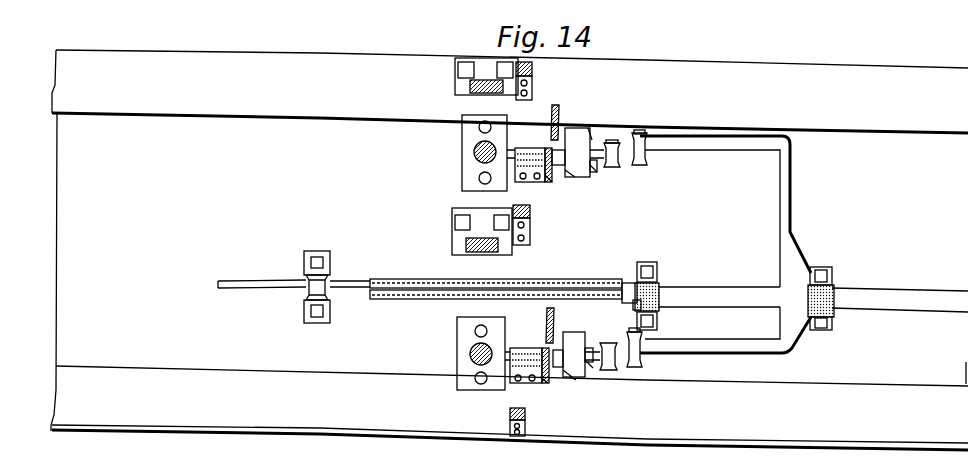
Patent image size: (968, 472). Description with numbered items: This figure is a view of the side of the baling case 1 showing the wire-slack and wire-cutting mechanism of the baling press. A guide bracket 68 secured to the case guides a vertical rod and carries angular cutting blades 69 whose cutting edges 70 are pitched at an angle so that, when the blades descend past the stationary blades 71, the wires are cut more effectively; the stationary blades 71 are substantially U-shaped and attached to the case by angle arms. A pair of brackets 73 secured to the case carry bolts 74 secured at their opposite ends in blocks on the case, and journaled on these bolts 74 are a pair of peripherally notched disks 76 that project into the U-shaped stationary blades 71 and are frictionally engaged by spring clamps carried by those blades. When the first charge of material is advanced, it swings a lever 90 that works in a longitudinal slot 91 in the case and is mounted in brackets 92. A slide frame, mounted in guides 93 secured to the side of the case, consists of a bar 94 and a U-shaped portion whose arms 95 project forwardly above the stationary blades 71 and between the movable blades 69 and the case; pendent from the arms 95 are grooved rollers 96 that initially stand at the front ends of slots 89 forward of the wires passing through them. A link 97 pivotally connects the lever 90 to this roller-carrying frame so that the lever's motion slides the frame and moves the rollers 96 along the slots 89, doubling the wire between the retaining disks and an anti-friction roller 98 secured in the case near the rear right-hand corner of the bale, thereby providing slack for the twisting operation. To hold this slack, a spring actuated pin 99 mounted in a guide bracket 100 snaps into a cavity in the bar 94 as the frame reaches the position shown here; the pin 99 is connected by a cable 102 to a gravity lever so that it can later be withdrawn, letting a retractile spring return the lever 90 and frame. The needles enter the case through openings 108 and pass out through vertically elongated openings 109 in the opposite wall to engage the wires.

The machine frame 1 is at (509, 250).
The guide bracket 68 is at (533, 70).
The angular cutting blades 69 is at (560, 128).
The cutting edges 70 is at (585, 252).
The stationary blades 71 is at (548, 180).
The brackets 73 is at (455, 85).
The bolts 74 is at (462, 152).
The disks 76 is at (536, 144).
The slots 89 is at (593, 166).
The lever 90 is at (345, 284).
The longitudinal slot 91 is at (226, 284).
The brackets 92 is at (306, 318).
The guides 93 is at (658, 276).
The bar 94 is at (902, 290).
The arms 95 is at (740, 150).
The grooved rollers 96 is at (648, 153).
The link 97 is at (410, 299).
The anti-friction roller 98 is at (620, 162).
The spring actuated pin 99 is at (660, 305).
The guide bracket 100 is at (660, 293).
The cable 102 is at (655, 309).
The openings 108 is at (580, 180).
The vertically elongated openings 109 is at (593, 143).